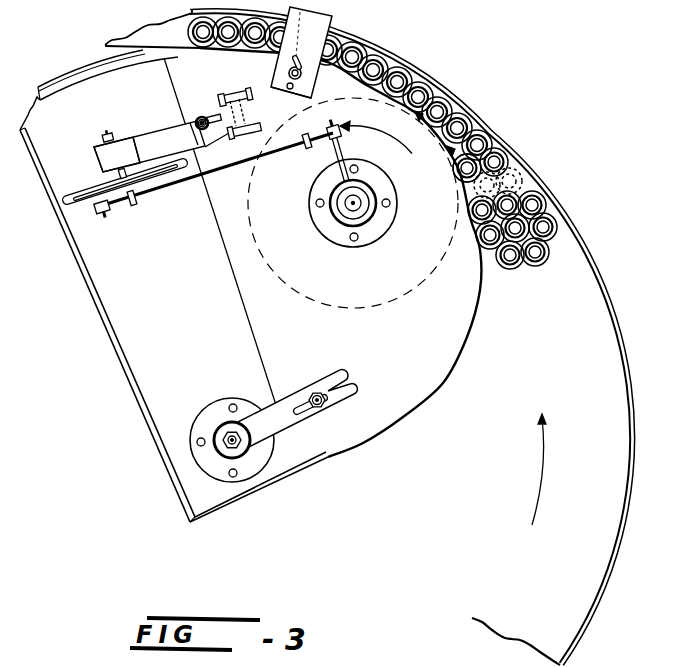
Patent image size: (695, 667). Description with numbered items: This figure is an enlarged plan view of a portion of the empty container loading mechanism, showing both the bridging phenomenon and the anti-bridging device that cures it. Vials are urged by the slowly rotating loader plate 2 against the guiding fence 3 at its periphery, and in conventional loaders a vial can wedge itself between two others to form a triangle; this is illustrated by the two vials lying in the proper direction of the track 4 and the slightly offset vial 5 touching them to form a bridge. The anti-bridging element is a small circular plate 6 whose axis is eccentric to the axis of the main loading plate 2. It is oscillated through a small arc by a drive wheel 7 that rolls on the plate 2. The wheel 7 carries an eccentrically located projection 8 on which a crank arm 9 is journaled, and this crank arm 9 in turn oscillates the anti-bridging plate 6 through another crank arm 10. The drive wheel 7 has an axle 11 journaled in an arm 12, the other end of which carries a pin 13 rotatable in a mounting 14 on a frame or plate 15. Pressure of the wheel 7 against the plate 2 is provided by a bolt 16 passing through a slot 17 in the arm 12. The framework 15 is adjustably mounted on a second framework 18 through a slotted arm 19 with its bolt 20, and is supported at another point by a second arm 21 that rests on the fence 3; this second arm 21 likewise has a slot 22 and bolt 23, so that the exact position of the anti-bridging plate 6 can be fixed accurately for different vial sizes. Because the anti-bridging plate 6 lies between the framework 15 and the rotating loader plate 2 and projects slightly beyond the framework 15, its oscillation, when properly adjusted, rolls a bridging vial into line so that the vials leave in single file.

The loader plate 2 is at (467, 436).
The guiding fence 3 is at (408, 64).
The vials in proper track direction 4 is at (494, 160).
The offset vial 5 is at (460, 170).
The anti-bridging plate 6 is at (447, 147).
The drive wheel 7 is at (82, 192).
The projection 8 is at (115, 203).
The crank arm 9 is at (180, 186).
The crank arm 10 is at (337, 162).
The axle 11 is at (98, 160).
The arm 12 is at (160, 128).
The pin 13 is at (219, 99).
The mounting 14 is at (251, 95).
The frame or plate 15 is at (298, 350).
The bolt 16 is at (203, 132).
The slot 17 is at (195, 121).
The second framework 18 is at (112, 327).
The slotted arm 19 is at (277, 407).
The bolt 20 is at (325, 405).
The second arm 21 is at (333, 22).
The slot 22 is at (273, 86).
The bolt 23 is at (301, 74).